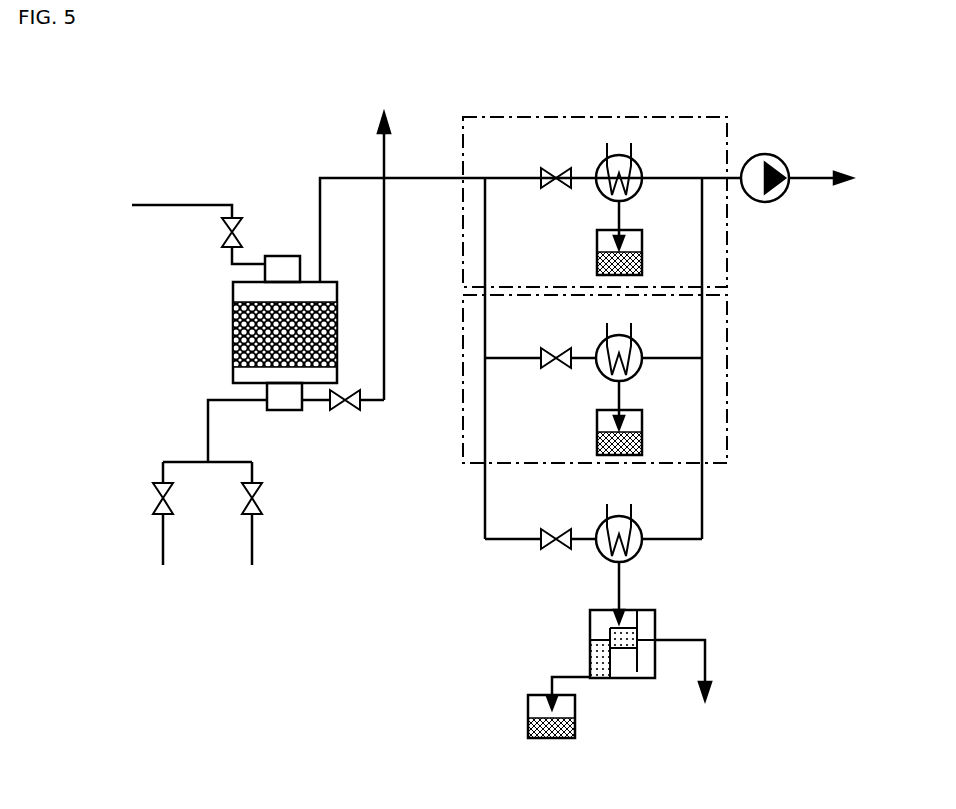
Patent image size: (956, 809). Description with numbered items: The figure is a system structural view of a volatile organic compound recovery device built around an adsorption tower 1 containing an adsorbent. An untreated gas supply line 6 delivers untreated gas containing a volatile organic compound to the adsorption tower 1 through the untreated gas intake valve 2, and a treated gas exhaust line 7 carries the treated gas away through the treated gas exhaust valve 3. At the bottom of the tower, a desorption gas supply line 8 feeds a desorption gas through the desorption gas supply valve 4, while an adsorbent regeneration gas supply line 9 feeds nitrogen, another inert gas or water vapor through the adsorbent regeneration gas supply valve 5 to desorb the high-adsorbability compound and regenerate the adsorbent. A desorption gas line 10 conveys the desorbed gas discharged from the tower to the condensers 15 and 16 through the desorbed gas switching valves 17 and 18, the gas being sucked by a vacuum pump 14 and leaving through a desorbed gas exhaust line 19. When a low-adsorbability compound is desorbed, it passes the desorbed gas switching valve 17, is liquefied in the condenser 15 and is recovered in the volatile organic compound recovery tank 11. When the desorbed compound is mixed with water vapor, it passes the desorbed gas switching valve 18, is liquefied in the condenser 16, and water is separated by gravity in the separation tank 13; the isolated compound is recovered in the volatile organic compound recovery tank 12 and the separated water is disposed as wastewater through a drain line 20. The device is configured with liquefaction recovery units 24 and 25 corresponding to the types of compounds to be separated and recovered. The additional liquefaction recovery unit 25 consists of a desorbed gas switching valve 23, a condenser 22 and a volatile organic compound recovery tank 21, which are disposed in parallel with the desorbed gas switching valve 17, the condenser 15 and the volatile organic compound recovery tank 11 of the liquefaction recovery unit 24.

The adsorption tower 1 is at (233, 340).
The untreated gas intake valve 2 is at (222, 232).
The treated gas exhaust valve 3 is at (345, 410).
The desorption gas supply valve 4 is at (153, 498).
The adsorbent regeneration gas supply valve 5 is at (262, 495).
The untreated gas supply line 6 is at (163, 205).
The treated gas exhaust line 7 is at (383, 140).
The desorption gas supply line 8 is at (163, 543).
The adsorbent regeneration gas supply line 9 is at (252, 545).
The desorption gas line 10 is at (420, 177).
The volatile organic compound recovery tank 11 is at (597, 262).
The volatile organic compound recovery tank 12 is at (528, 722).
The separation tank 13 is at (590, 630).
The vacuum pump 14 is at (770, 155).
The condenser 15 is at (640, 166).
The condenser 16 is at (644, 527).
The desorbed gas switching valve 17 is at (556, 167).
The desorbed gas switching valve 18 is at (557, 528).
The desorbed gas exhaust line 19 is at (825, 177).
The drain line 20 is at (705, 663).
The volatile organic compound recovery tank 21 is at (597, 443).
The condenser 22 is at (640, 346).
The desorbed gas switching valve 23 is at (556, 347).
The liquefaction recovery unit 24 is at (612, 202).
The liquefaction recovery unit 25 is at (612, 379).